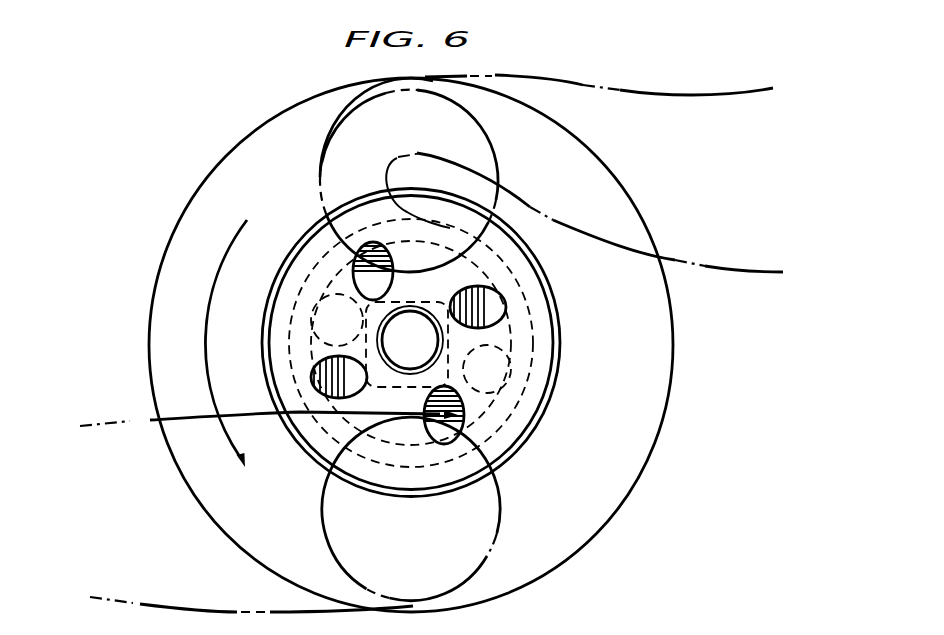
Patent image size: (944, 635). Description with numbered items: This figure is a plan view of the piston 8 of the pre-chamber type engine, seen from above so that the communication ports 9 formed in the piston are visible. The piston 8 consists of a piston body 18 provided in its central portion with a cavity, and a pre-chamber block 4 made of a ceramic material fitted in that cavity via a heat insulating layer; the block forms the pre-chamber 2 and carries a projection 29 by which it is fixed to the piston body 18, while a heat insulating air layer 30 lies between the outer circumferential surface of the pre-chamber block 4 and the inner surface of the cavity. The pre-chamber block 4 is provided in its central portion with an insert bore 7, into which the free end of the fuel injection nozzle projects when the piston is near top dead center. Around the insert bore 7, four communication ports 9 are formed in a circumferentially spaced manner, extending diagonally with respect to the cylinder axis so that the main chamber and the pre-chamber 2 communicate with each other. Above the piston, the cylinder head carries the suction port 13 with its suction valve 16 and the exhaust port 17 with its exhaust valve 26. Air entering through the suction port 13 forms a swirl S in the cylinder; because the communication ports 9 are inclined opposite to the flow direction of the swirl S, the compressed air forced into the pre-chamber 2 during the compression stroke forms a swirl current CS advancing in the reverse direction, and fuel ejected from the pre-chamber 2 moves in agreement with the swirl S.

The pre-chamber 2 is at (312, 450).
The pre-chamber block 4 is at (548, 327).
The insert bore 7 is at (445, 362).
The piston 8 is at (188, 193).
The communication ports 9 is at (350, 257).
The suction port 13 is at (702, 181).
The suction valve 16 is at (357, 152).
The exhaust port 17 is at (172, 526).
The piston body 18 is at (663, 347).
The exhaust valve 26 is at (467, 532).
The projection 29 is at (563, 368).
The heat insulating air layer 30 is at (548, 416).
The swirl S is at (207, 334).
The swirl current CS is at (478, 272).